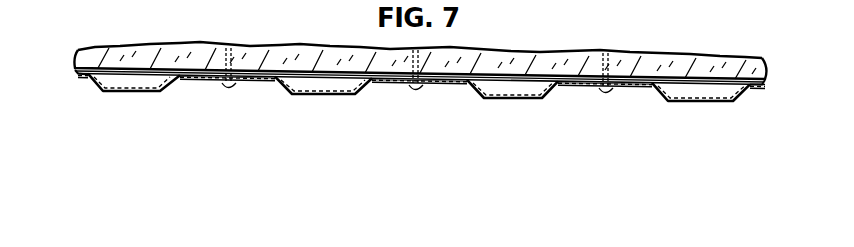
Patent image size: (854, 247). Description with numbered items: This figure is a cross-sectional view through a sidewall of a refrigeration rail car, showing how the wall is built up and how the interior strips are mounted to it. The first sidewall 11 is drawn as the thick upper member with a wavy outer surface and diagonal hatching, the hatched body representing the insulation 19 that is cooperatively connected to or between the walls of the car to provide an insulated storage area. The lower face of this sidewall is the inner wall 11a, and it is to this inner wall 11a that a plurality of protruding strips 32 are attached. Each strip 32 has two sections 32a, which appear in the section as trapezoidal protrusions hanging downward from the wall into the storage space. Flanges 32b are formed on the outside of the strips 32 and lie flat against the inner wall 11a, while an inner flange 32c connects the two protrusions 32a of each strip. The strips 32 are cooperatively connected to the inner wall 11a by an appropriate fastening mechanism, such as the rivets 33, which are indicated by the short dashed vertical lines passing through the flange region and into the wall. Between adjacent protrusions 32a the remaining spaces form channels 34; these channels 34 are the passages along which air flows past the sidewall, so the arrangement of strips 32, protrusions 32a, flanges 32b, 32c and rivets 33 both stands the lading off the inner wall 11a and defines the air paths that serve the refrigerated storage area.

The first sidewall 11 is at (590, 44).
The inner wall 11a is at (541, 78).
The insulation 19 is at (522, 66).
The protruding strip 32 is at (103, 94).
The section 32a is at (133, 93).
The flange 32b is at (257, 86).
The inner flange 32c is at (80, 74).
The rivet 33 is at (226, 84).
The channel 34 is at (207, 88).